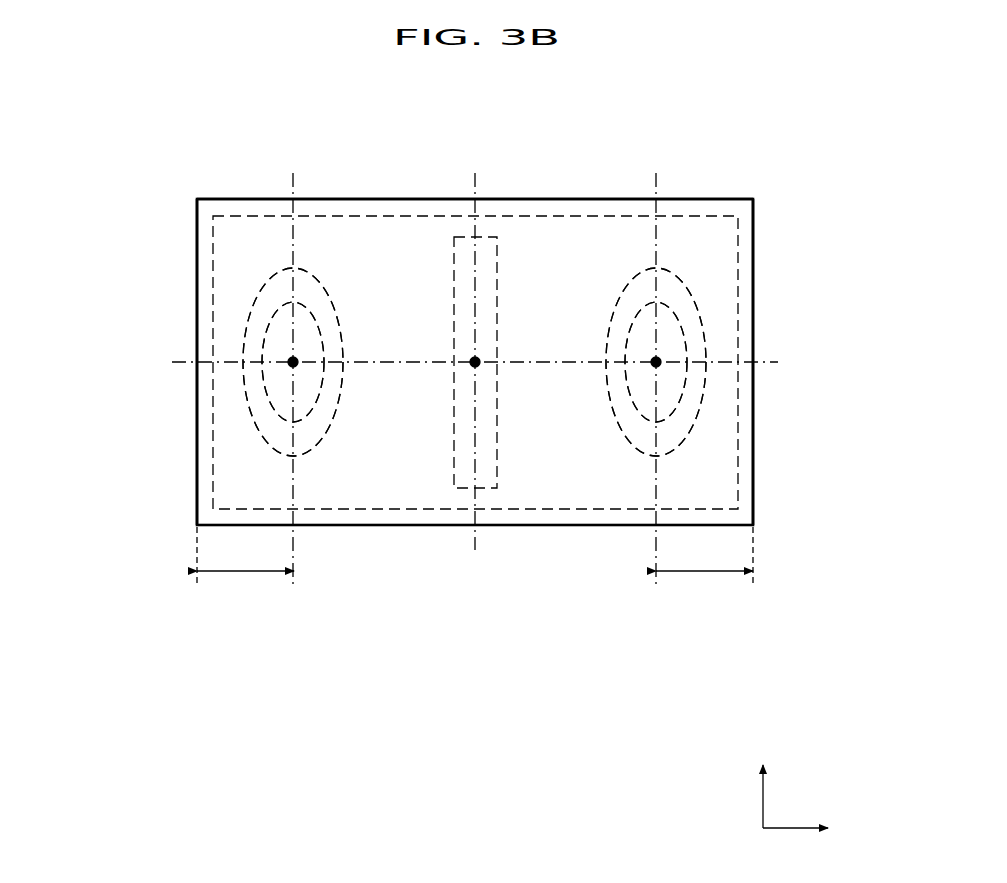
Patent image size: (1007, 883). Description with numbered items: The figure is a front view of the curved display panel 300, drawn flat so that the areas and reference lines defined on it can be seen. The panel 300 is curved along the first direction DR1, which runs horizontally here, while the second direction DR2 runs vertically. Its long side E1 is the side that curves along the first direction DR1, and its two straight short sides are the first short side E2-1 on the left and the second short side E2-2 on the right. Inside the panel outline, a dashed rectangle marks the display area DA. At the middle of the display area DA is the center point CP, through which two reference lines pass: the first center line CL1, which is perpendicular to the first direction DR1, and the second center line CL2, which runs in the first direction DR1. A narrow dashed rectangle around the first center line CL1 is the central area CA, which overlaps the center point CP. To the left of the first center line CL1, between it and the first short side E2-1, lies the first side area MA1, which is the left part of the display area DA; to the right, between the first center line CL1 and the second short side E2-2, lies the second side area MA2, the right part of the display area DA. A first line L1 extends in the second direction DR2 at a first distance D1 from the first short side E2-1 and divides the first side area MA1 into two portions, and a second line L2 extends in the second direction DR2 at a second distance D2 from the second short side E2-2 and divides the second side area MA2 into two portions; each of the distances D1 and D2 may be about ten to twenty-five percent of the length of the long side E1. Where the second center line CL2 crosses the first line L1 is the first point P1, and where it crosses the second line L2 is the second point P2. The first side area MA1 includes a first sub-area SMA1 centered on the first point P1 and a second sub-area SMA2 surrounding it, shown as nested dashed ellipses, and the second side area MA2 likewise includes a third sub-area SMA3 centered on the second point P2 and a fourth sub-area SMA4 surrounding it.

The display panel 300 is at (755, 182).
The display area DA is at (738, 410).
The long side E1 is at (363, 199).
The first short side E2-1 is at (197, 458).
The second short side E2-2 is at (753, 458).
The first line L1 is at (294, 365).
The second line L2 is at (657, 365).
The first center line CL1 is at (474, 347).
The second center line CL2 is at (494, 362).
The central area CA is at (490, 237).
The center point CP is at (487, 375).
The first side area MA1 is at (105, 258).
The second side area MA2 is at (848, 258).
The first sub-area SMA1 is at (270, 318).
The second sub-area SMA2 is at (270, 276).
The third sub-area SMA3 is at (680, 320).
The fourth sub-area SMA4 is at (678, 273).
The first point P1 is at (305, 351).
The second point P2 is at (667, 351).
The first distance D1 is at (245, 566).
The second distance D2 is at (704, 566).
The first direction DR1 is at (813, 827).
The second direction DR2 is at (763, 785).